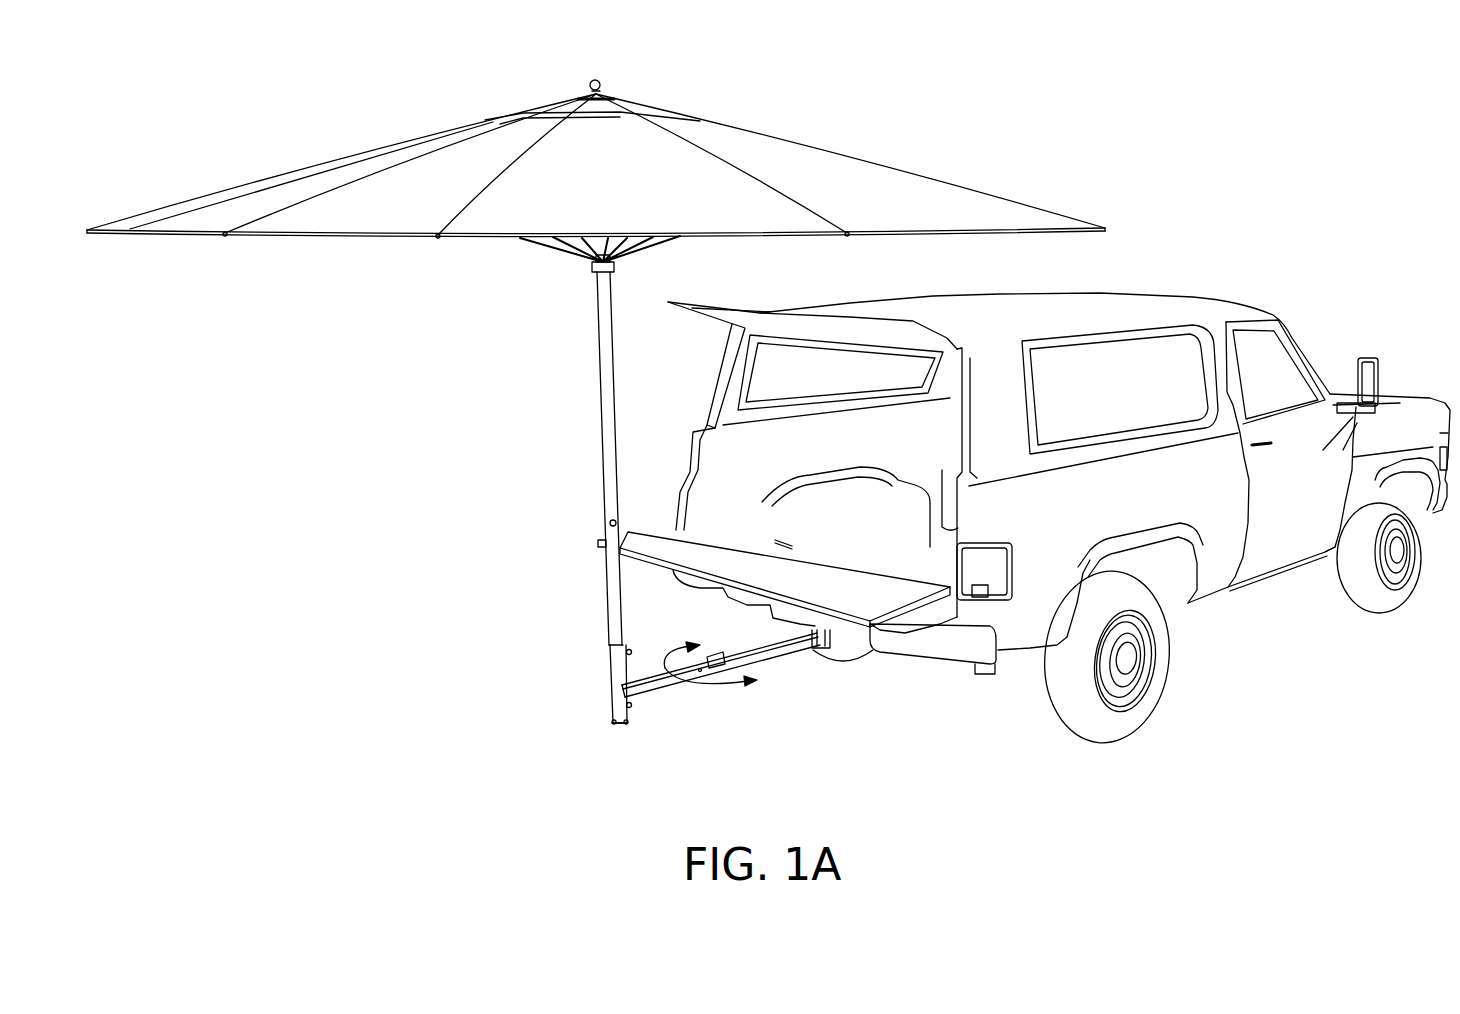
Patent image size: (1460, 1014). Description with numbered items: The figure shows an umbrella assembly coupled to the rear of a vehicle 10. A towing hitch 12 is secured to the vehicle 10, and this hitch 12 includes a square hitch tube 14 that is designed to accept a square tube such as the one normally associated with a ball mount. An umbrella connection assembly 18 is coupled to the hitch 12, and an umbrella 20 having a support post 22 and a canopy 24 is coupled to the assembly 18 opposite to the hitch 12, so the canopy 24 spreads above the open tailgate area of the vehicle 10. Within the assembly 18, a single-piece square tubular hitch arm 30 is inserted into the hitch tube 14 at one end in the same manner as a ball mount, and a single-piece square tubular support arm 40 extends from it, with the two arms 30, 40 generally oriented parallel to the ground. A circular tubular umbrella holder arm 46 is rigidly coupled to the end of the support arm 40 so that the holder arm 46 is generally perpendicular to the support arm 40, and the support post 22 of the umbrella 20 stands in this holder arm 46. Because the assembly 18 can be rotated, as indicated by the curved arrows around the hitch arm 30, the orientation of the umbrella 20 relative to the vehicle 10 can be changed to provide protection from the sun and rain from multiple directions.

The vehicle 10 is at (1328, 200).
The towing hitch 12 is at (847, 660).
The square hitch tube 14 is at (817, 652).
The umbrella connection assembly 18 is at (528, 612).
The umbrella 20 is at (1007, 143).
The support post 22 is at (603, 423).
The canopy 24 is at (848, 155).
The hitch arm 30 is at (745, 645).
The support arm 40 is at (655, 685).
The umbrella holder arm 46 is at (610, 677).